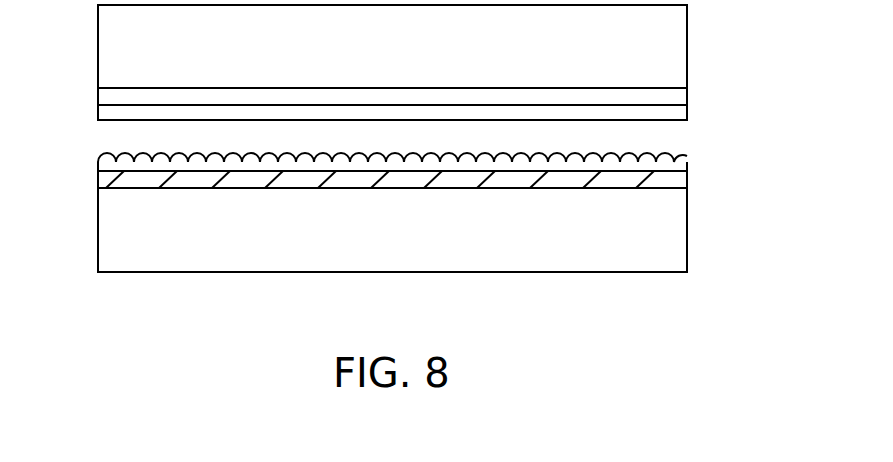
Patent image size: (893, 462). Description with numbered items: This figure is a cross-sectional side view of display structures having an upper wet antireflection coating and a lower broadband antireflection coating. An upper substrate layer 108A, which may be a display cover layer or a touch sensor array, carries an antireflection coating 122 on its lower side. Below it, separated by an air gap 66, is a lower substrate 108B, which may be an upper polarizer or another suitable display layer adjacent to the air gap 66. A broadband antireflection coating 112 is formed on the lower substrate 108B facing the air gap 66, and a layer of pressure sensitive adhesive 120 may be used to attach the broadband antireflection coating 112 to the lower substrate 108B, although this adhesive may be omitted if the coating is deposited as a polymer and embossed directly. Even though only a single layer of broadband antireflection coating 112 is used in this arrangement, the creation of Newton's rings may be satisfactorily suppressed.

The upper substrate layer 108A is at (687, 35).
The lower substrate 108B is at (688, 238).
The antireflection coating 122 is at (87, 88).
The air gap 66 is at (695, 140).
The broadband antireflection coating 112 is at (685, 160).
The pressure sensitive adhesive 120 is at (685, 182).